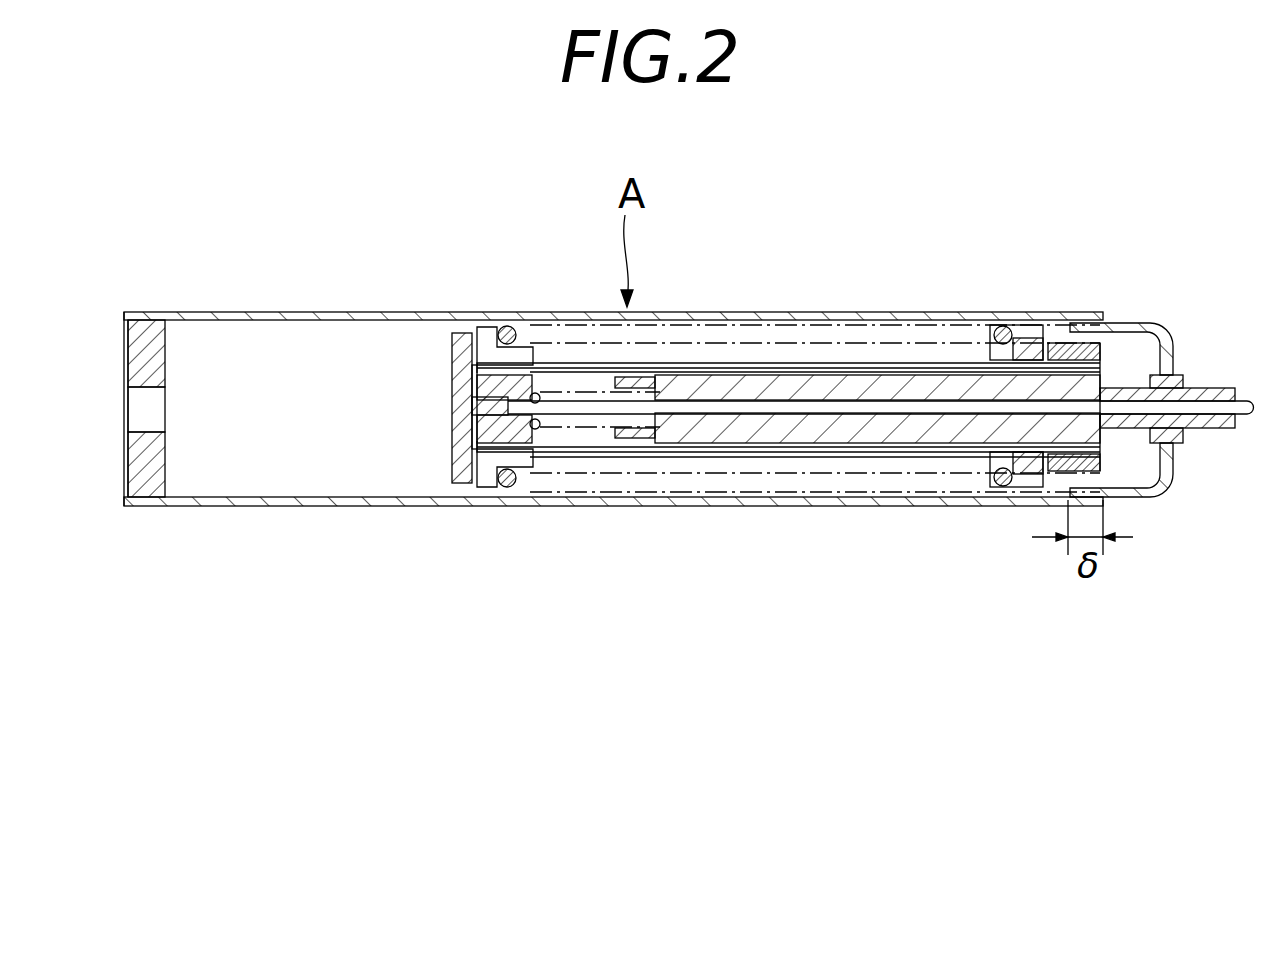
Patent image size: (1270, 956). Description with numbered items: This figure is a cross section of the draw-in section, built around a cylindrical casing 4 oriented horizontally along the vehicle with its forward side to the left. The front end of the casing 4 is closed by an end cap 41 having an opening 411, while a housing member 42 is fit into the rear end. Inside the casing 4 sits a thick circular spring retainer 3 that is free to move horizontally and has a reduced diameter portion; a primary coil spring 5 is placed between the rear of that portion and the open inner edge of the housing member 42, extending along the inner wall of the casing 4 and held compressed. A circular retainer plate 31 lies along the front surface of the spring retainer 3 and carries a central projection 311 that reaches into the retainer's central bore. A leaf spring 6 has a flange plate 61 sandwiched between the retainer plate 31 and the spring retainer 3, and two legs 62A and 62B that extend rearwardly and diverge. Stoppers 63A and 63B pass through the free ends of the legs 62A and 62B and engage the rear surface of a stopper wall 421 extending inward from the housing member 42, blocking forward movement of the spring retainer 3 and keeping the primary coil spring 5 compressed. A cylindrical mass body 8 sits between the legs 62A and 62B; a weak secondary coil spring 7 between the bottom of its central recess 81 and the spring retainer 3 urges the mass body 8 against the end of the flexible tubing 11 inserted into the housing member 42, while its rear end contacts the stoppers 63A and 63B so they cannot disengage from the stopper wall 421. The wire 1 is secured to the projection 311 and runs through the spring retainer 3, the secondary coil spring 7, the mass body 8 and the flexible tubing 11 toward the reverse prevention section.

The wire 1 is at (583, 414).
The spring retainer 3 is at (490, 483).
The retainer plate 31 is at (483, 443).
The central projection 311 is at (490, 415).
The casing 4 is at (338, 312).
The end cap 41 is at (150, 312).
The opening 411 is at (153, 408).
The housing member 42 is at (1143, 323).
The stopper wall 421 is at (1015, 327).
The primary coil spring 5 is at (510, 327).
The leaf spring 6 is at (769, 362).
The flange plate 61 is at (472, 390).
The leg 62A is at (858, 372).
The leg 62B is at (843, 457).
The stopper 63A is at (1072, 343).
The stopper 63B is at (1030, 500).
The secondary coil spring 7 is at (538, 430).
The mass body 8 is at (763, 428).
The central recess 81 is at (655, 438).
The flexible tubing 11 is at (1200, 388).